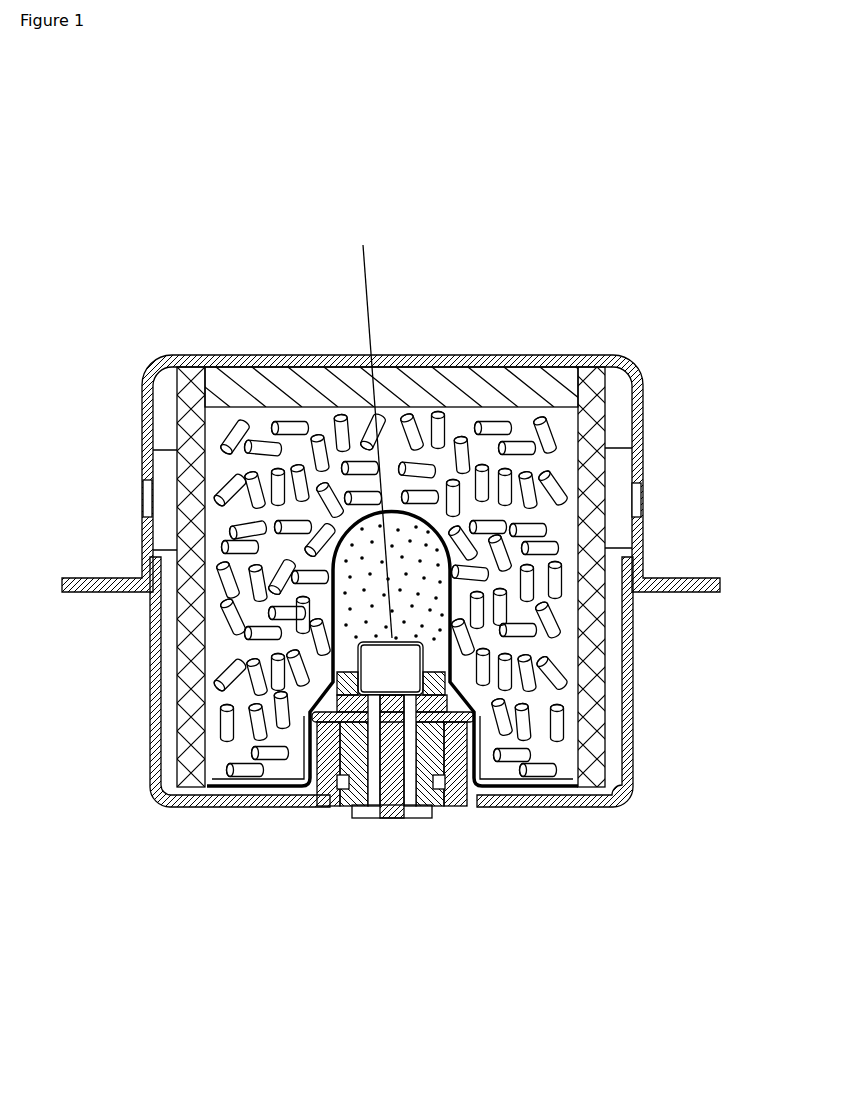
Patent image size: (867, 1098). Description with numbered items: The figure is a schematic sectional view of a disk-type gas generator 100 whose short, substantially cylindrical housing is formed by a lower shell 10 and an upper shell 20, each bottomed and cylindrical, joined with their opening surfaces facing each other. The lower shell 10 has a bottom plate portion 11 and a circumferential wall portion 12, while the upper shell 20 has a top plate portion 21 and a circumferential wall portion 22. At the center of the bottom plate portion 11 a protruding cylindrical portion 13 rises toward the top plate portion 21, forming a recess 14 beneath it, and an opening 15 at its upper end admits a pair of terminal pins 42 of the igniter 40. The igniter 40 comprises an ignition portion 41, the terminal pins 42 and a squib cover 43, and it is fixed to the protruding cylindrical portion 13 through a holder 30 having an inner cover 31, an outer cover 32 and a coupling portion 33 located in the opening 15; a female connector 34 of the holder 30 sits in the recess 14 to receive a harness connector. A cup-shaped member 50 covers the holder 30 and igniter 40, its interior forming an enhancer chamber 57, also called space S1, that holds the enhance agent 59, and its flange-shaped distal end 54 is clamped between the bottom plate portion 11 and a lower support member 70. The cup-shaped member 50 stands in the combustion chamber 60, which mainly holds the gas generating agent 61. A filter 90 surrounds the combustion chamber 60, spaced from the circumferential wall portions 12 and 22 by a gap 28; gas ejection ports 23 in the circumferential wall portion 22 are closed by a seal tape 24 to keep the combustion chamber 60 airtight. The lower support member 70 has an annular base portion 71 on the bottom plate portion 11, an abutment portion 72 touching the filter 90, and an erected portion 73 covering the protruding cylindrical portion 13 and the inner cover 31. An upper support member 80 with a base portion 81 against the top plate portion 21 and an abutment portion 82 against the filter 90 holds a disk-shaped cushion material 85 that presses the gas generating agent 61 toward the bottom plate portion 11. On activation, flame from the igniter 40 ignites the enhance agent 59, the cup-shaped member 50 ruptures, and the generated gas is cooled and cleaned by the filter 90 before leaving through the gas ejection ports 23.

The disk-type gas generator 100 is at (600, 252).
The lower shell 10 is at (616, 808).
The bottom plate portion 11 is at (570, 808).
The circumferential wall portion 12 is at (633, 735).
The protruding cylindrical portion 13 is at (315, 806).
The recess 14 is at (338, 806).
The opening 15 is at (393, 812).
The upper shell 20 is at (633, 357).
The top plate portion 21 is at (593, 355).
The circumferential wall portion 22 is at (643, 452).
The gas ejection ports 23 is at (643, 530).
The seal tape 24 is at (643, 488).
The gap 28 is at (167, 433).
The holder 30 is at (446, 810).
The inner cover 31 is at (462, 697).
The outer cover 32 is at (418, 806).
The coupling portion 33 is at (330, 806).
The female connector 34 is at (447, 806).
The igniter 40 is at (327, 672).
The ignition portion 41 is at (405, 660).
The terminal pins 42 is at (404, 806).
The squib cover 43 is at (388, 425).
The cup-shaped member 50 is at (326, 470).
The distal end 54 is at (275, 807).
The enhancer chamber 57 is at (392, 532).
The enhance agent 59 is at (358, 653).
The combustion chamber 60 is at (493, 420).
The gas generating agent 61 is at (490, 432).
The lower support member 70 is at (202, 807).
The base portion 71 is at (228, 807).
The abutment portion 72 is at (207, 757).
The erected portion 73 is at (300, 807).
The upper support member 80 is at (203, 355).
The base portion 81 is at (242, 373).
The abutment portion 82 is at (167, 393).
The cushion material 85 is at (297, 383).
The filter 90 is at (177, 472).
The space S1 is at (220, 537).